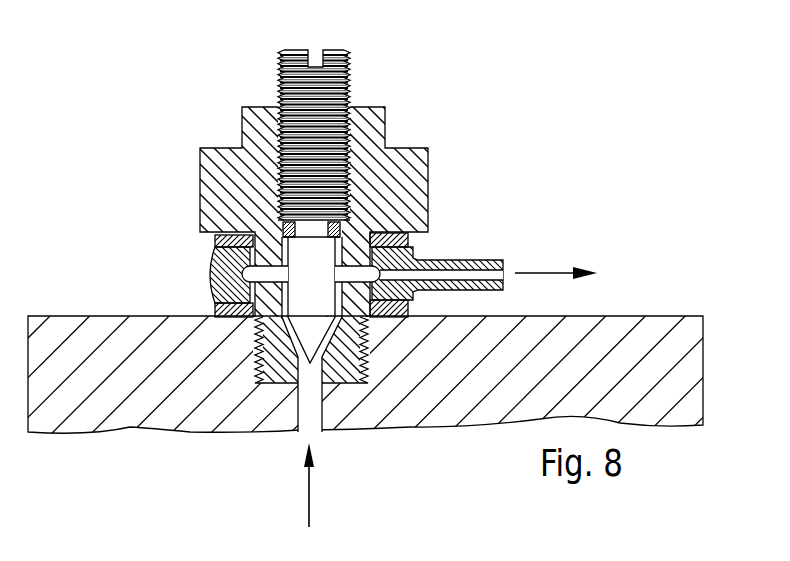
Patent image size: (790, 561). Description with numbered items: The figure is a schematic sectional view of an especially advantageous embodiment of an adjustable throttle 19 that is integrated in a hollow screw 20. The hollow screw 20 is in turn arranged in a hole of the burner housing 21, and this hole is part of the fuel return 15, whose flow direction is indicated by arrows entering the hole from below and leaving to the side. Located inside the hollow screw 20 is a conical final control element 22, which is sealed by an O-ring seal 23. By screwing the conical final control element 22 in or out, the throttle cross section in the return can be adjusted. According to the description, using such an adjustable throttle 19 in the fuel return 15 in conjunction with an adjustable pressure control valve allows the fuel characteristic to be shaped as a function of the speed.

The adjustable throttle 19 is at (319, 227).
The hollow screw 20 is at (398, 168).
The burner housing 21 is at (643, 332).
The conical final control element 22 is at (325, 95).
The O-ring seal 23 is at (345, 226).
The fuel return 15 is at (545, 273).